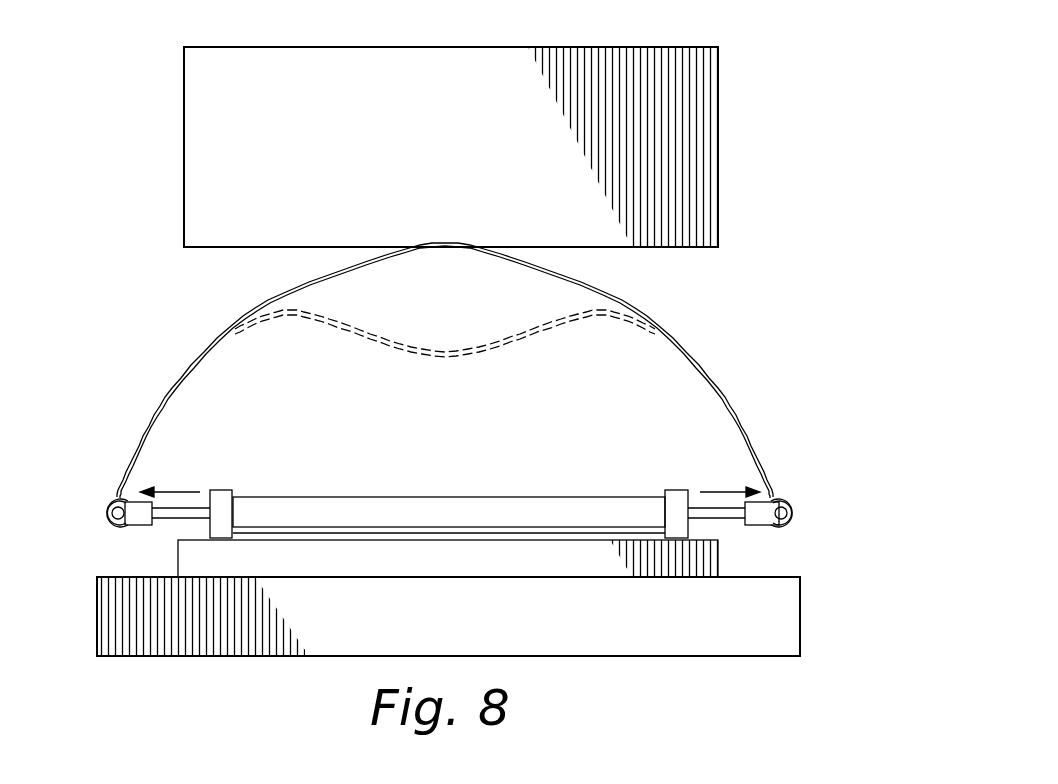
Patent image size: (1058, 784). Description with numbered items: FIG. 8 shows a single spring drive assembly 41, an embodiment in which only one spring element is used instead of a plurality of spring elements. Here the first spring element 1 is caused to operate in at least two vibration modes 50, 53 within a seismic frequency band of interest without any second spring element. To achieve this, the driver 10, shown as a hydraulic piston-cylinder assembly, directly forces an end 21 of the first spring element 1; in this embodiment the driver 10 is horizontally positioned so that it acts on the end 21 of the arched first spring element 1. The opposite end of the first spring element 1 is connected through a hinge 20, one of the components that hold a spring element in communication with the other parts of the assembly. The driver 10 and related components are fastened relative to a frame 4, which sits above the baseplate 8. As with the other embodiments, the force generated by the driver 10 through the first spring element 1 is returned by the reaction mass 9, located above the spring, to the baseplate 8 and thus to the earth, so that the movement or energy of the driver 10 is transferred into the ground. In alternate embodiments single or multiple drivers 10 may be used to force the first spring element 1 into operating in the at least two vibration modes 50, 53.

The single spring drive assembly 41 is at (645, 18).
The reaction mass 9 is at (718, 147).
The first spring element 1 is at (617, 292).
The vibration mode 50 is at (447, 252).
The vibration mode 53 is at (451, 358).
The driver 10 is at (448, 497).
The end of the first spring element 21 is at (104, 510).
The hinge 20 is at (797, 513).
The frame 4 is at (720, 553).
The baseplate 8 is at (802, 617).